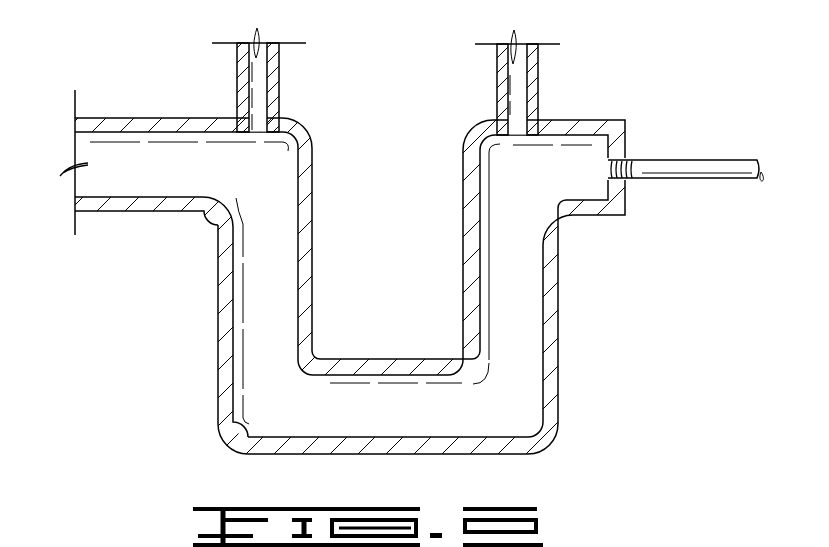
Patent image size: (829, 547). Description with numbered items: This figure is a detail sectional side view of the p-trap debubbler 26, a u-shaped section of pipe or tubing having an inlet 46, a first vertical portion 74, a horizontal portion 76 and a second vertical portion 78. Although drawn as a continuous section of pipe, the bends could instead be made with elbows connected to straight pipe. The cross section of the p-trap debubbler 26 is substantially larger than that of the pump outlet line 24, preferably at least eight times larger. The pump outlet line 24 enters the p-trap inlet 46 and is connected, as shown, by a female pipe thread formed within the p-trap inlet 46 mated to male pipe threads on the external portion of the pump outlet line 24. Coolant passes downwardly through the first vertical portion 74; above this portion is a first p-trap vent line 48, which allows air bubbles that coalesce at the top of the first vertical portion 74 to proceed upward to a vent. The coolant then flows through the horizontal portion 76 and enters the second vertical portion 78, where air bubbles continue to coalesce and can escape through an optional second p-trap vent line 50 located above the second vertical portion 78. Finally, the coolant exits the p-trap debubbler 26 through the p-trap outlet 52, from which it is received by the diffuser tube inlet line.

The pump outlet line 24 is at (695, 158).
The p-trap debubbler 26 is at (180, 375).
The p-trap inlet 46 is at (587, 120).
The first p-trap vent line 48 is at (498, 97).
The second p-trap vent line 50 is at (280, 88).
The p-trap outlet 52 is at (137, 117).
The first vertical portion 74 is at (558, 340).
The horizontal portion 76 is at (298, 454).
The second vertical portion 78 is at (218, 288).